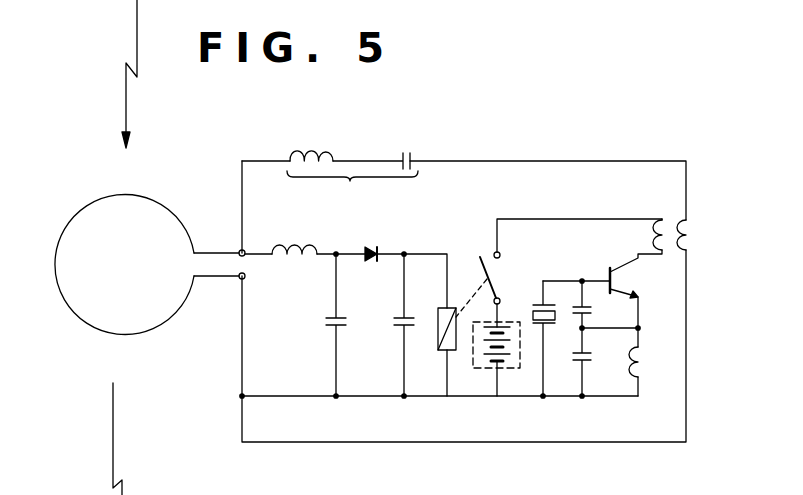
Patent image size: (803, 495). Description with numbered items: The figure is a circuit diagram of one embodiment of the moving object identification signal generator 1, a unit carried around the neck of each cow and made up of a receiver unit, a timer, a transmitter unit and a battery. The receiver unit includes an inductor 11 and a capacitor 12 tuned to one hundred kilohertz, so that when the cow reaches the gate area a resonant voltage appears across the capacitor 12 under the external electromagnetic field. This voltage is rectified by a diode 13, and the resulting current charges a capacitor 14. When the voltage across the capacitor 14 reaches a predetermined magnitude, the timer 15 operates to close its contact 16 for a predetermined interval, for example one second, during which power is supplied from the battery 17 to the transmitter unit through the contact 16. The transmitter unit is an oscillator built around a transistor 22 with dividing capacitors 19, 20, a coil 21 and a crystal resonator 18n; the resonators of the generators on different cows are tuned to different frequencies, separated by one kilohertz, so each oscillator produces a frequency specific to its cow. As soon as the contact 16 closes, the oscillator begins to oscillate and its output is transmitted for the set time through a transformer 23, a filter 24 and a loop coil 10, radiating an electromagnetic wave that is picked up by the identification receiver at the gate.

The moving object identification signal generator 1 is at (586, 161).
The loop coil 10 is at (159, 197).
The inductor 11 is at (290, 267).
The capacitor 12 is at (325, 325).
The diode 13 is at (370, 268).
The capacitor 14 is at (393, 325).
The timer 15 is at (430, 325).
The contact 16 is at (489, 251).
The battery 17 is at (483, 369).
The crystal resonator 18n is at (561, 339).
The dividing capacitor 19 is at (596, 304).
The dividing capacitor 20 is at (596, 363).
The coil 21 is at (629, 361).
The transistor 22 is at (637, 289).
The transformer 23 is at (667, 222).
The filter 24 is at (352, 179).